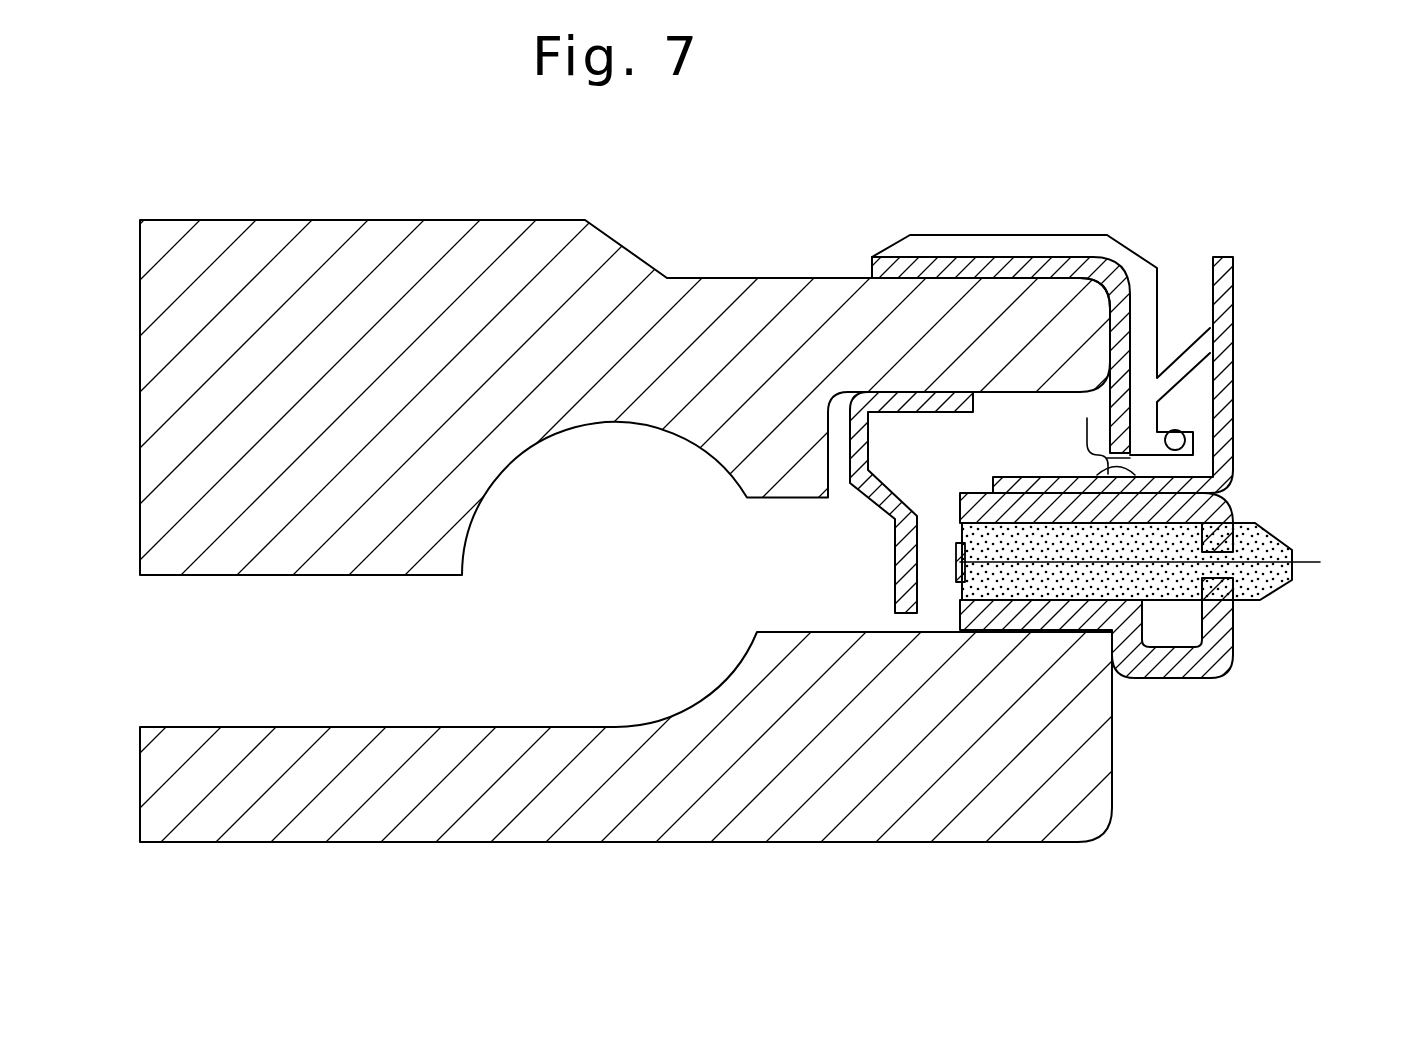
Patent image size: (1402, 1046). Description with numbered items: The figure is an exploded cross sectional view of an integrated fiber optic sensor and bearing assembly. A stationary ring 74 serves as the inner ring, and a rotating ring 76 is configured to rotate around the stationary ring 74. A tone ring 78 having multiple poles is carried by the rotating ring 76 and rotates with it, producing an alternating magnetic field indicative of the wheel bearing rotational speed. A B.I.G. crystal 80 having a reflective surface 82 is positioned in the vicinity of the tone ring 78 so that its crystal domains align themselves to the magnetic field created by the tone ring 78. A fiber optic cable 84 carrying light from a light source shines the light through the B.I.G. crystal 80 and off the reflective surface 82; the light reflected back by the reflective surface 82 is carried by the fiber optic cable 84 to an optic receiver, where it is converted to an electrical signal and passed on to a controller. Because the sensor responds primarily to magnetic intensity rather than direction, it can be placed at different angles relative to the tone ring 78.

The stationary ring 74 is at (695, 845).
The rotating ring 76 is at (352, 220).
The tone ring 78 is at (893, 538).
The B.I.G. crystal 80 is at (965, 572).
The reflective surface 82 is at (953, 557).
The fiber optic cable 84 is at (1253, 566).